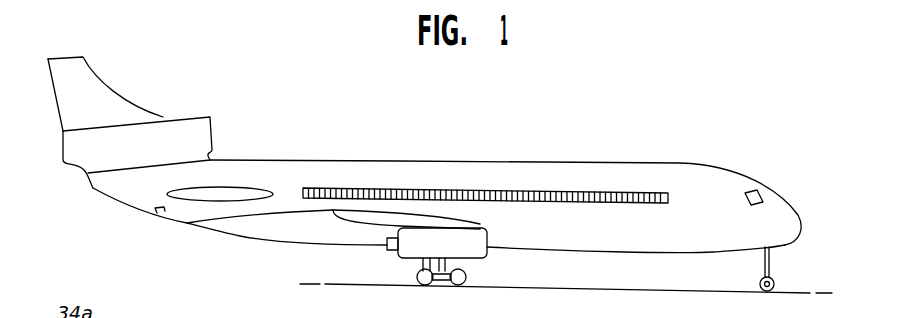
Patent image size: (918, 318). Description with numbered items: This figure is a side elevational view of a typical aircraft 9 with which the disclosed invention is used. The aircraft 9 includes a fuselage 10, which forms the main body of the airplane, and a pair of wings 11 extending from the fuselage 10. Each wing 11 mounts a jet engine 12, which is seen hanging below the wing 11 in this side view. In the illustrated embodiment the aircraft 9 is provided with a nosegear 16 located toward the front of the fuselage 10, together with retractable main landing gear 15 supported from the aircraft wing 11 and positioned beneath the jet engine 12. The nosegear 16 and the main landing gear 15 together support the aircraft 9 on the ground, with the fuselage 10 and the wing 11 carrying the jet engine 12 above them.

The aircraft 9 is at (618, 173).
The fuselage 10 is at (554, 235).
The wing 11 is at (380, 220).
The jet engine 12 is at (475, 258).
The main landing gear 15 is at (440, 286).
The nosegear 16 is at (776, 266).